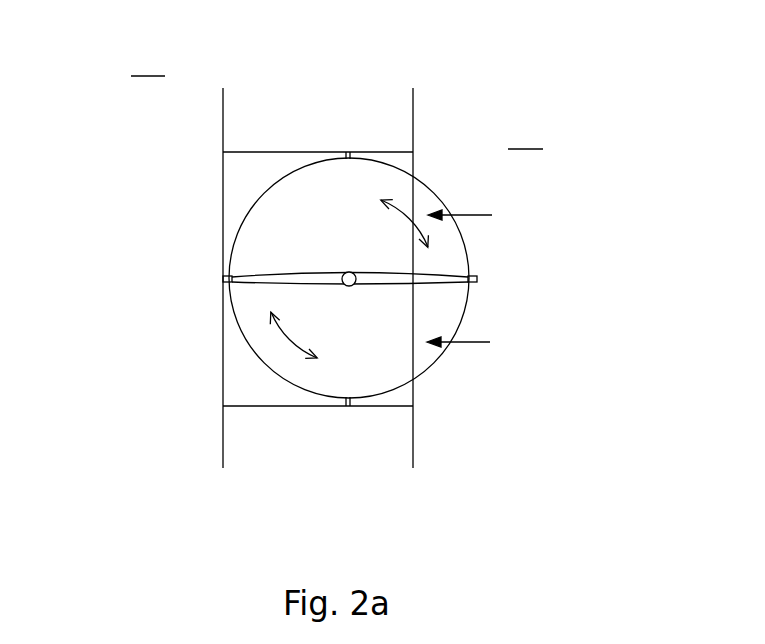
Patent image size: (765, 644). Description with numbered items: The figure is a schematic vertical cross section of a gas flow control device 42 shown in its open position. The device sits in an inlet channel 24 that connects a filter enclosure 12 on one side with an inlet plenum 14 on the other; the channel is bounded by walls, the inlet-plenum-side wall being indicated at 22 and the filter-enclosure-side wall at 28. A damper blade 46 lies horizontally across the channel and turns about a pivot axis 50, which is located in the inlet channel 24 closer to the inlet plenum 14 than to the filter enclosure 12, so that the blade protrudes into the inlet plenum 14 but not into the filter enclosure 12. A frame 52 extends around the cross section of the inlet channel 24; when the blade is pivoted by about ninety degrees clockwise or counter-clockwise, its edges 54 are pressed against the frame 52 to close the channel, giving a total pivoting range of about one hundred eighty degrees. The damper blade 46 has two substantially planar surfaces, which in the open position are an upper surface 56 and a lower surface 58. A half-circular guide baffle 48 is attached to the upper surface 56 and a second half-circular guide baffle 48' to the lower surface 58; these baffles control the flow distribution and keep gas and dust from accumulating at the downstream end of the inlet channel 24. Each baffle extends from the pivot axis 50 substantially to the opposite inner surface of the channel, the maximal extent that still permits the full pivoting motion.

The filter enclosure 12 is at (149, 58).
The inlet plenum 14 is at (526, 132).
The outlet passage wall 22 is at (413, 430).
The inlet channel 24 is at (283, 406).
The inlet passage wall 28 is at (222, 423).
The gas flow control device 42 is at (377, 93).
The damper blade 46 is at (317, 273).
The guide baffle 48 is at (277, 183).
The guide baffle 48' is at (475, 372).
The pivot axis 50 is at (355, 285).
The frame 52 is at (345, 152).
The edges of the damper blade 54 is at (477, 277).
The upper surface 56 is at (267, 277).
The lower surface 58 is at (270, 287).